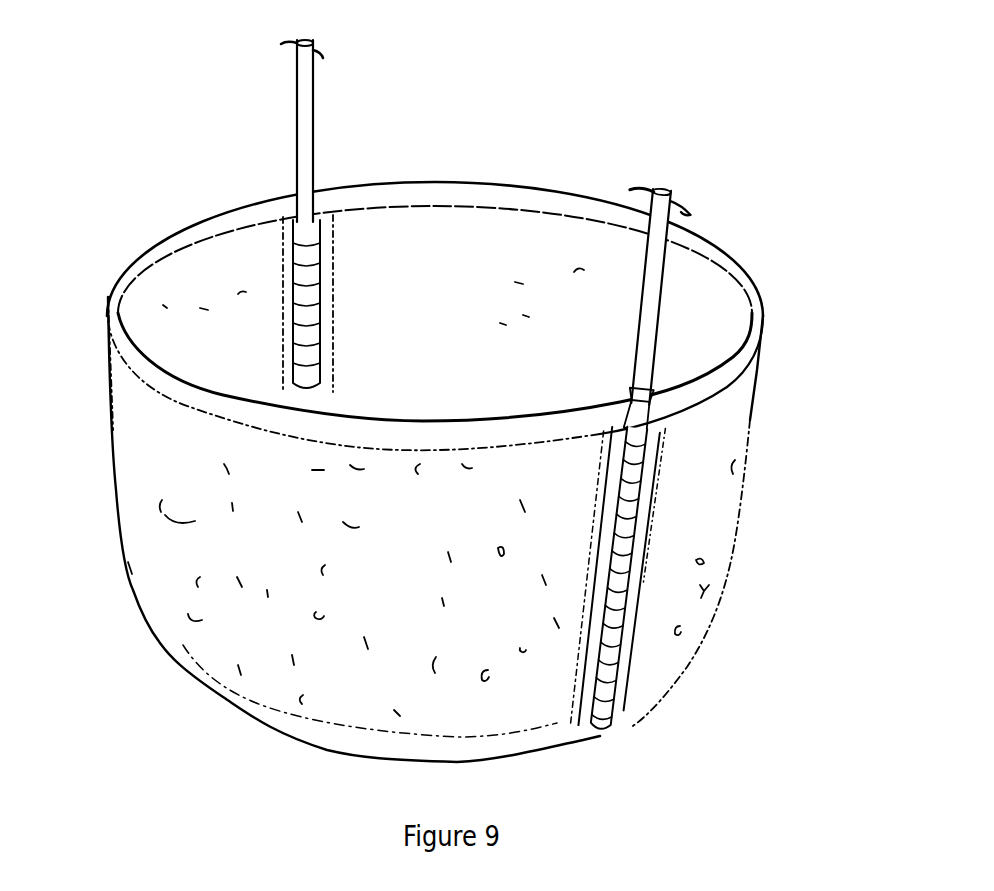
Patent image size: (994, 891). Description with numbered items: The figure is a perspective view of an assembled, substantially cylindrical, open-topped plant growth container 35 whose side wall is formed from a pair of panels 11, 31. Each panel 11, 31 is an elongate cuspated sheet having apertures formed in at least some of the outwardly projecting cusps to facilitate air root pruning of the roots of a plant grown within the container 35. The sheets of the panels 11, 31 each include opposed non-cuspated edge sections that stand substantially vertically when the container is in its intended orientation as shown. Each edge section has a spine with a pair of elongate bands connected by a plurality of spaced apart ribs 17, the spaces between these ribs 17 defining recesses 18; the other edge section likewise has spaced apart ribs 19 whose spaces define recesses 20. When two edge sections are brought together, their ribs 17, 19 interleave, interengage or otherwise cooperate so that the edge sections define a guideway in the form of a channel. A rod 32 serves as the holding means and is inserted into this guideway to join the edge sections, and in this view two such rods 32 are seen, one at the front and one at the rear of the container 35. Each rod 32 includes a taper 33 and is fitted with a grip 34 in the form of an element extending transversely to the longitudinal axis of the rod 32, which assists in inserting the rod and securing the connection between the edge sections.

The panel 11 is at (140, 252).
The spaced apart ribs 17 is at (310, 288).
The recesses 18 is at (317, 377).
The spaced apart ribs 19 is at (610, 717).
The recesses 20 is at (620, 630).
The panel 31 is at (727, 248).
The rod 32 is at (303, 310).
The taper 33 is at (633, 396).
The grip 34 is at (295, 88).
The plant growth container 35 is at (535, 168).